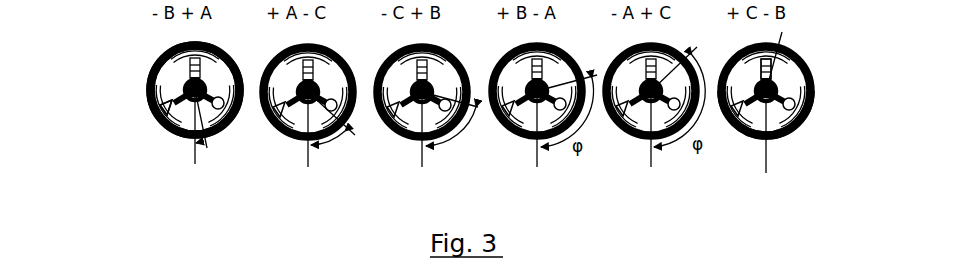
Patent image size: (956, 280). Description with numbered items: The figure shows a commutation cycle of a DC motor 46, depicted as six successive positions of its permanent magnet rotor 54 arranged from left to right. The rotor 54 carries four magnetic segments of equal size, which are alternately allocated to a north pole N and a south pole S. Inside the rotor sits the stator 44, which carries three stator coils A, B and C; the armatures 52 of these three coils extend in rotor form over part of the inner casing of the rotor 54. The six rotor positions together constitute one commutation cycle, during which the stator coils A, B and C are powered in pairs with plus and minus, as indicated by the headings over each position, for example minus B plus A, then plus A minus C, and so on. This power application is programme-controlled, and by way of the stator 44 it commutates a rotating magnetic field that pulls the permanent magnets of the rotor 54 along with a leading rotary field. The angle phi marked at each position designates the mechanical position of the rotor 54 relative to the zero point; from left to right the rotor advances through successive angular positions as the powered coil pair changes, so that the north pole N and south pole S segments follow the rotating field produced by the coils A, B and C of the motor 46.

The DC motor 46 is at (147, 133).
The permanent magnet rotor 54 is at (144, 82).
The stator 44 is at (315, 114).
The armatures 52 is at (412, 116).
The stator coil A is at (173, 97).
The stator coil B is at (776, 72).
The stator coil C is at (779, 113).
The north pole N is at (733, 133).
The south pole S is at (797, 133).